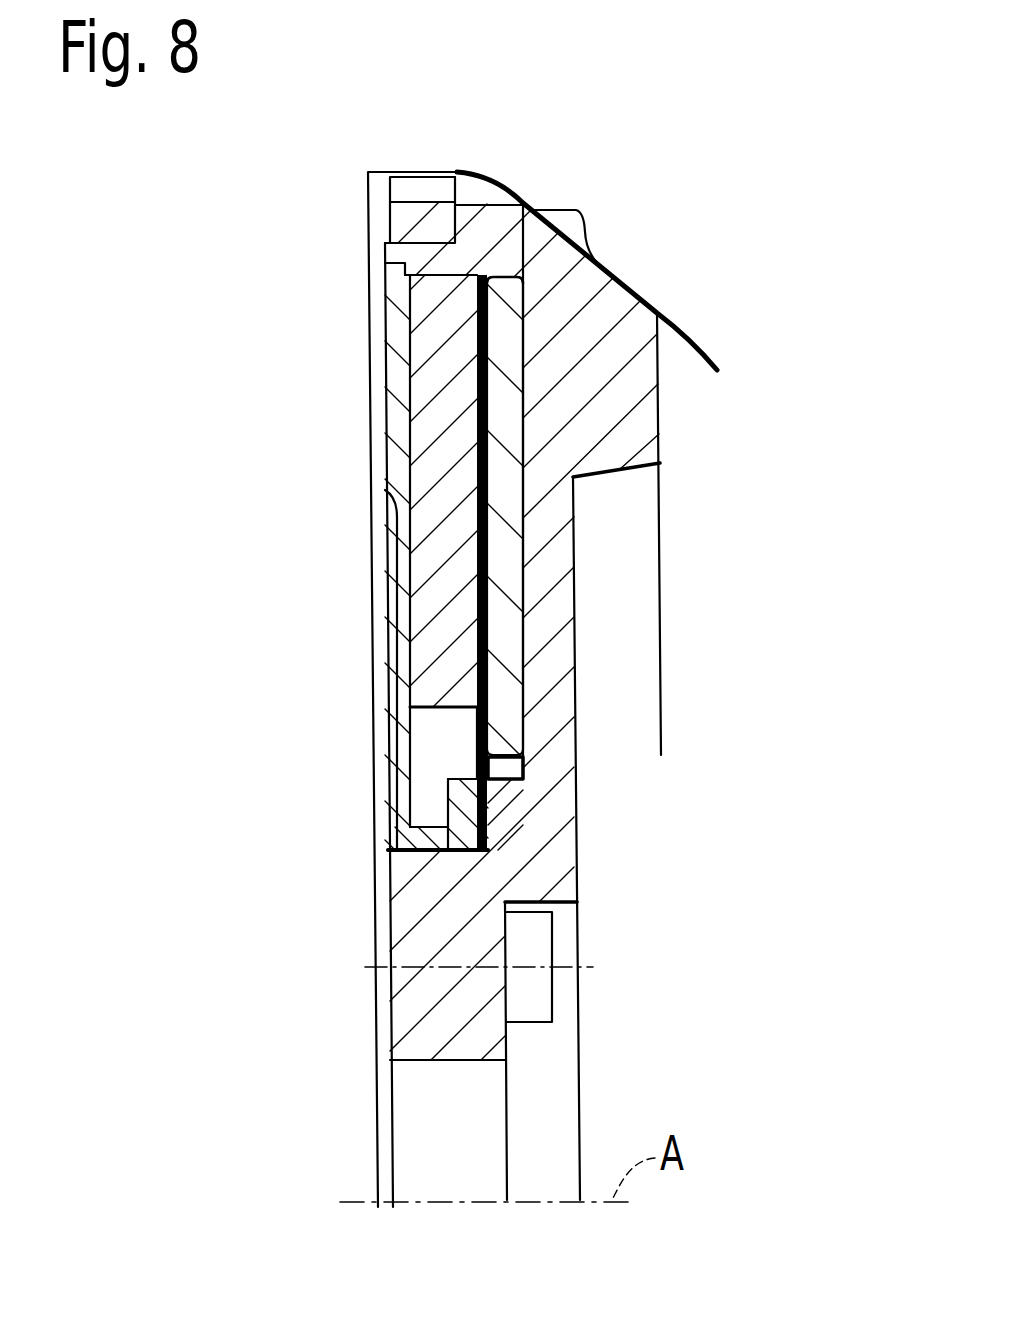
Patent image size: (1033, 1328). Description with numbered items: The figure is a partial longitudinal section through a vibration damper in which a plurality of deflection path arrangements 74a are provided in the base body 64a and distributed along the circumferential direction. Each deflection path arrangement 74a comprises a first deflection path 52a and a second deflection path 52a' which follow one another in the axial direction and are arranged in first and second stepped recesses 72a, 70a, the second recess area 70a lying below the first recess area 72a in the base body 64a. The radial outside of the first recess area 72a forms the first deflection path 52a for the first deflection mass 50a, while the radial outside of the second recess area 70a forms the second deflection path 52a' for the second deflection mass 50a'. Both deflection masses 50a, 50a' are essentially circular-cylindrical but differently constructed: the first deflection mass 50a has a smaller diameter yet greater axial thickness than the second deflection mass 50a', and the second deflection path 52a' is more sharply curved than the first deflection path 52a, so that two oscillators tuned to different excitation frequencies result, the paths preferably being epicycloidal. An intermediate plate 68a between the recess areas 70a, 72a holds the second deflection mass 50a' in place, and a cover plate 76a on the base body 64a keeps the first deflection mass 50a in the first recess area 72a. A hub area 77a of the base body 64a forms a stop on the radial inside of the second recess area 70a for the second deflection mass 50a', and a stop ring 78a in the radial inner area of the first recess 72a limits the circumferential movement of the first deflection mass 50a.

The first deflection mass 50a is at (295, 556).
The second deflection mass 50a' is at (677, 516).
The first deflection path 52a is at (496, 426).
The second deflection path 52a' is at (605, 145).
The base body 64a is at (612, 322).
The intermediate plate 68a is at (475, 722).
The second recess area 70a is at (510, 760).
The first recess area 72a is at (427, 808).
The deflection path arrangement 74a is at (545, 198).
The cover plate 76a is at (383, 350).
The hub area 77a is at (507, 777).
The stop ring 78a is at (450, 837).